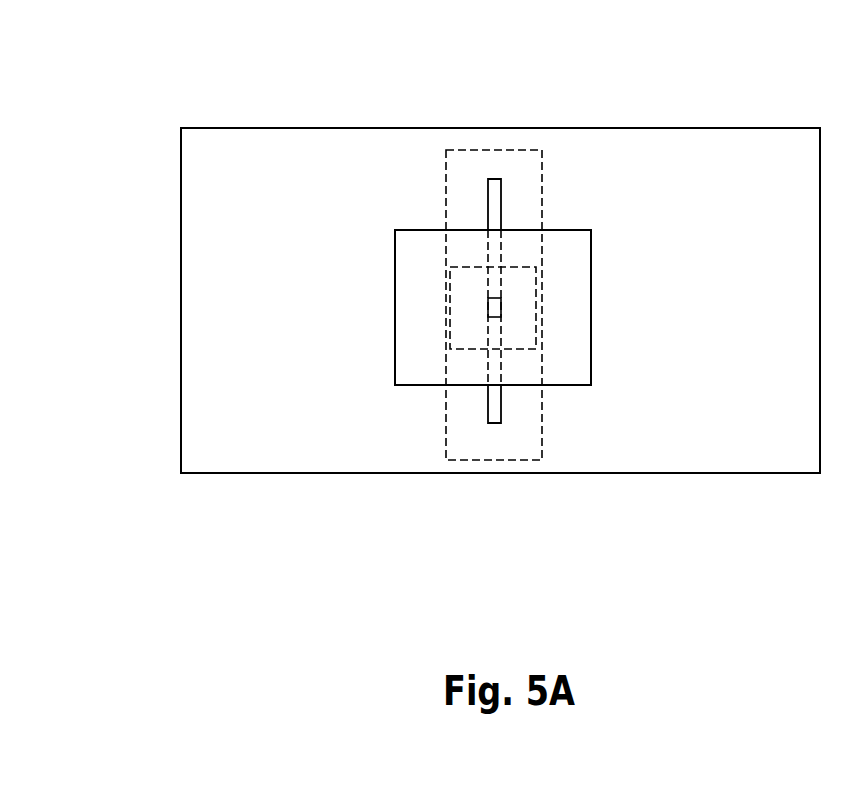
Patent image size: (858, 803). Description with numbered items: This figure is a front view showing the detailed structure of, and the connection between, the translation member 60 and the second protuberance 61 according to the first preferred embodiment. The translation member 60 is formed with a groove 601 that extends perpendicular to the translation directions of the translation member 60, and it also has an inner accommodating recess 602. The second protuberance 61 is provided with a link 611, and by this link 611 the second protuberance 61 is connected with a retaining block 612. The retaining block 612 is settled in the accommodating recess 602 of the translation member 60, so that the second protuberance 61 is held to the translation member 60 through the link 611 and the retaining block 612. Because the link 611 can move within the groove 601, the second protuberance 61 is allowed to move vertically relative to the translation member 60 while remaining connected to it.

The translation member 60 is at (281, 128).
The second protuberance 61 is at (395, 365).
The groove 601 is at (503, 410).
The inner accommodating recess 602 is at (445, 437).
The link 611 is at (497, 297).
The retaining block 612 is at (525, 349).